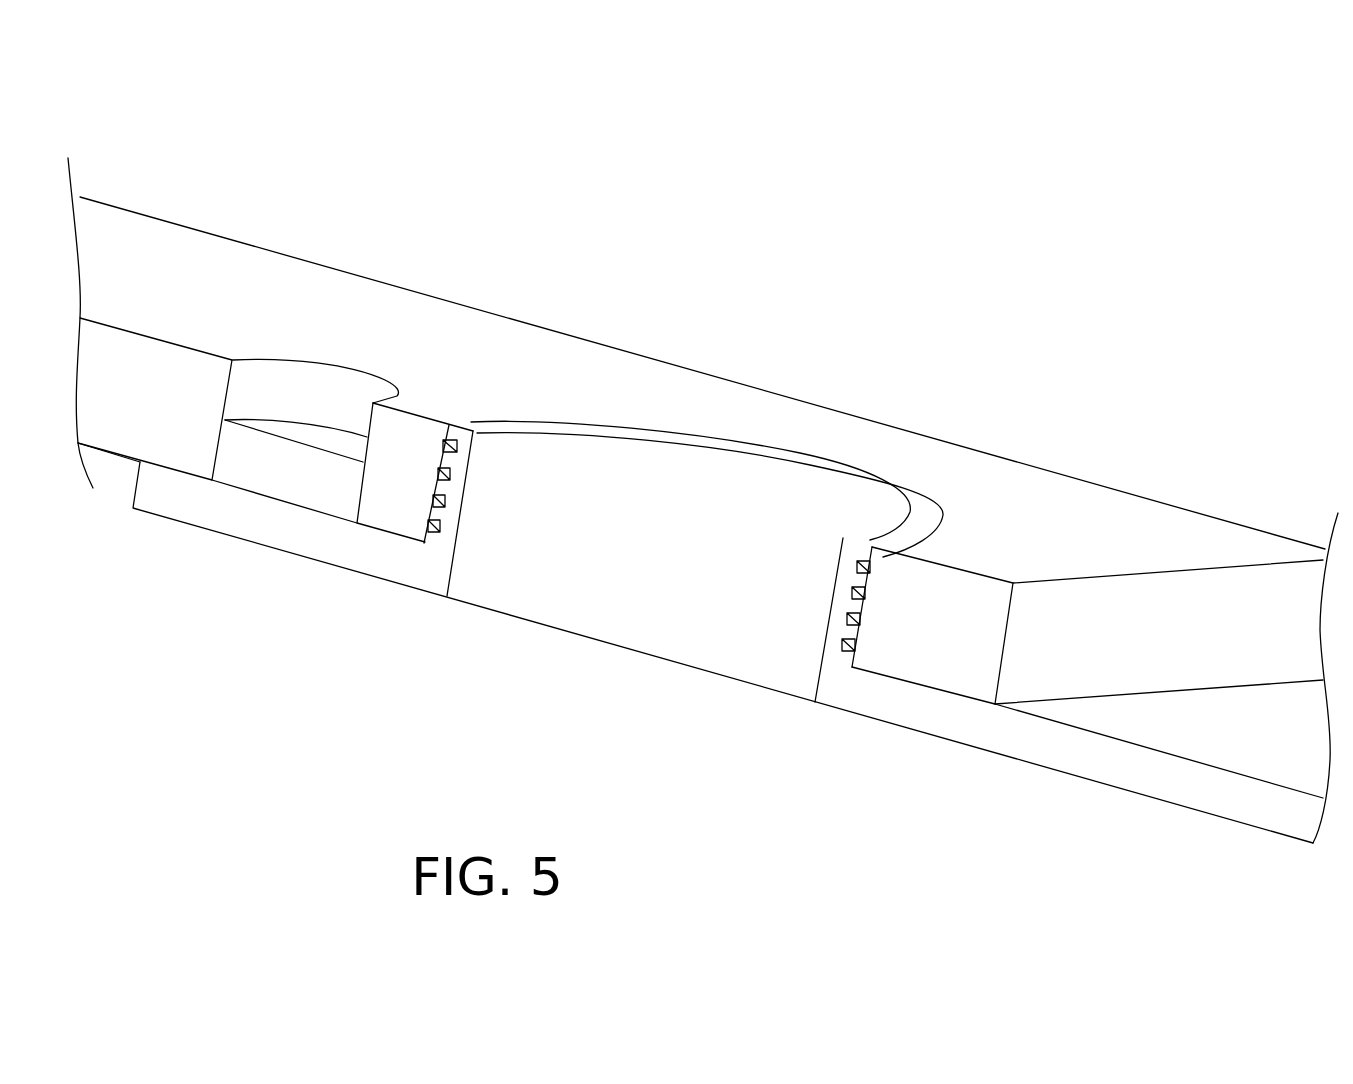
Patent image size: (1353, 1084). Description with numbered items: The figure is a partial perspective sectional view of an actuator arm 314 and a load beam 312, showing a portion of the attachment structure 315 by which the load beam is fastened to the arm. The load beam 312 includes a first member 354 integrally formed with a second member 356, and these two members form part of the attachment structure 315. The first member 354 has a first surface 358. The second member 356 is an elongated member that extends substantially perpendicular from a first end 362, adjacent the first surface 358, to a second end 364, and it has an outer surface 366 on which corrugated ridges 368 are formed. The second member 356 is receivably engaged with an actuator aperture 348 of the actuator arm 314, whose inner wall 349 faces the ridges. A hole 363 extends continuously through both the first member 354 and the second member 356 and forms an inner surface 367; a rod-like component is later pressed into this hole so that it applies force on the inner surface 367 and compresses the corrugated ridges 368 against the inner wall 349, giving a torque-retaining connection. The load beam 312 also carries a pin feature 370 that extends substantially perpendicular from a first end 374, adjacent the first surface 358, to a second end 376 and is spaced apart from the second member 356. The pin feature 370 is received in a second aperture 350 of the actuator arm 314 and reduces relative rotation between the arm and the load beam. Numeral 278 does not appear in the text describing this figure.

The flexible interconnect 278 is at (820, 480).
The load beam 312 is at (995, 745).
The actuator arm 314 is at (250, 277).
The attachment structure 315 is at (793, 423).
The actuator aperture 348 is at (442, 452).
The inner wall 349 is at (912, 556).
The second aperture 350 is at (212, 435).
The first member 354 is at (398, 568).
The second member 356 is at (470, 453).
The first surface 358 is at (377, 533).
The first end 362 is at (424, 543).
The hole 363 is at (838, 573).
The second end 364 is at (470, 452).
The outer surface 366 is at (860, 633).
The inner surface 367 is at (831, 603).
The corrugated ridges 368 is at (453, 437).
The pin feature 370 is at (263, 475).
The first end 374 is at (208, 480).
The second end 376 is at (330, 442).